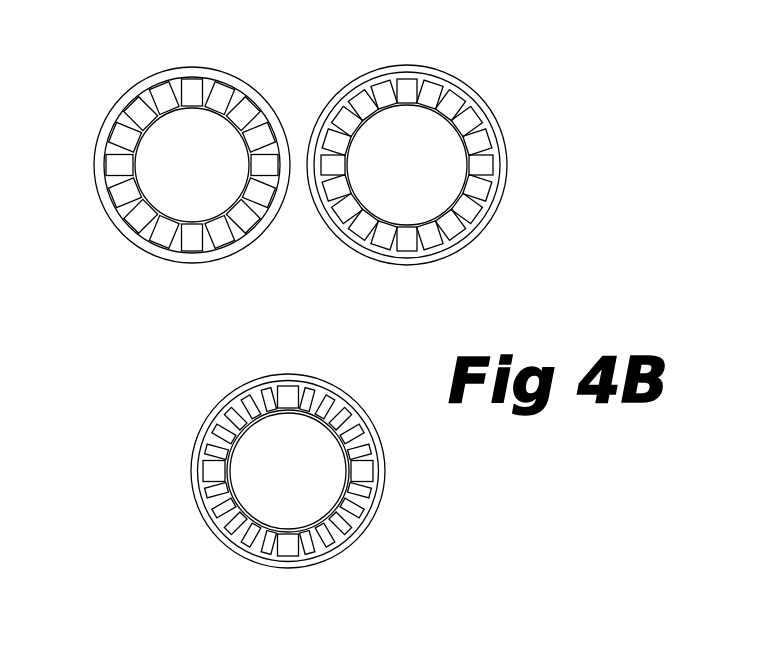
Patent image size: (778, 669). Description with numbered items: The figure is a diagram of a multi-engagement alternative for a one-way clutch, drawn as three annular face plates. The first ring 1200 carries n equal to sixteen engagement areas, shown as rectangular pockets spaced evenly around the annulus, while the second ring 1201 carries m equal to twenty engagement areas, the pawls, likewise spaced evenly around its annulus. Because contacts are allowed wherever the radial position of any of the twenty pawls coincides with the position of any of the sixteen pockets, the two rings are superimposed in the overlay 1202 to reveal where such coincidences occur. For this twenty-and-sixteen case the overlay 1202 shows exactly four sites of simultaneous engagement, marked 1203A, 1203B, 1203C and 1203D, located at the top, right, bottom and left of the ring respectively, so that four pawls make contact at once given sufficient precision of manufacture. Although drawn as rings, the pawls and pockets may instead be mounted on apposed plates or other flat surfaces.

The ring 1200 is at (110, 107).
The ring 1201 is at (443, 72).
The overlay 1202 is at (382, 505).
The site of simultaneous engagement 1203A is at (292, 395).
The site of simultaneous engagement 1203B is at (370, 474).
The site of simultaneous engagement 1203C is at (291, 536).
The site of simultaneous engagement 1203D is at (210, 470).